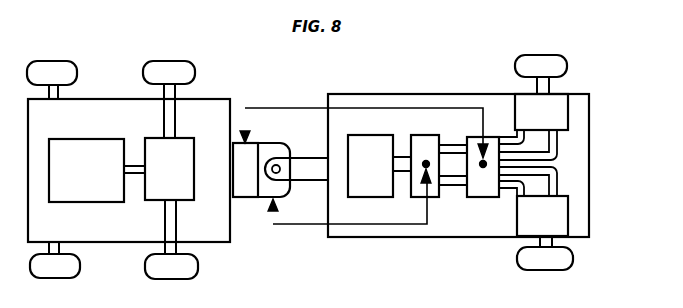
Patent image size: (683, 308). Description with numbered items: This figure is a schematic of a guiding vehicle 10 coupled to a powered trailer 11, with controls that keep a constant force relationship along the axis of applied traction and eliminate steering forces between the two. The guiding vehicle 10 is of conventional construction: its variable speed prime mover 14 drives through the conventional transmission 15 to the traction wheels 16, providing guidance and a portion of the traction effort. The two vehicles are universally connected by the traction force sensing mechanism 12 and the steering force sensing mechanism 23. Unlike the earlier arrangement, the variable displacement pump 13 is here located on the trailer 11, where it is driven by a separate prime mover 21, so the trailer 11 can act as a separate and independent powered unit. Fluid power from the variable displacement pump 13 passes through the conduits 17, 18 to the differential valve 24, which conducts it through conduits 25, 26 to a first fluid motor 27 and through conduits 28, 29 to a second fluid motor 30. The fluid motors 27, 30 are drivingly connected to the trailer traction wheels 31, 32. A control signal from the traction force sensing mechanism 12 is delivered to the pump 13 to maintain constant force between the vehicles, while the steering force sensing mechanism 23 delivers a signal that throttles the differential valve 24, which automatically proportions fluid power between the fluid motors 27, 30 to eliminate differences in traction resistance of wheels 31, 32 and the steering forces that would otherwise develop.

The guiding vehicle 10 is at (121, 247).
The trailer 11 is at (422, 243).
The traction force sensing mechanism 12 is at (283, 186).
The variable displacement pump 13 is at (418, 194).
The variable speed prime mover 14 is at (87, 193).
The transmission 15 is at (190, 183).
The traction wheels 16 is at (177, 66).
The conduit 17 is at (453, 144).
The conduit 18 is at (452, 186).
The separate prime mover 21 is at (375, 190).
The steering force sensing mechanism 23 is at (247, 188).
The differential valve 24 is at (482, 190).
The conduit 25 is at (512, 135).
The conduit 26 is at (561, 146).
The first fluid motor 27 is at (557, 115).
The conduit 28 is at (508, 190).
The conduit 29 is at (561, 184).
The second fluid motor 30 is at (562, 218).
The traction wheel 31 is at (557, 63).
The traction wheel 32 is at (558, 262).